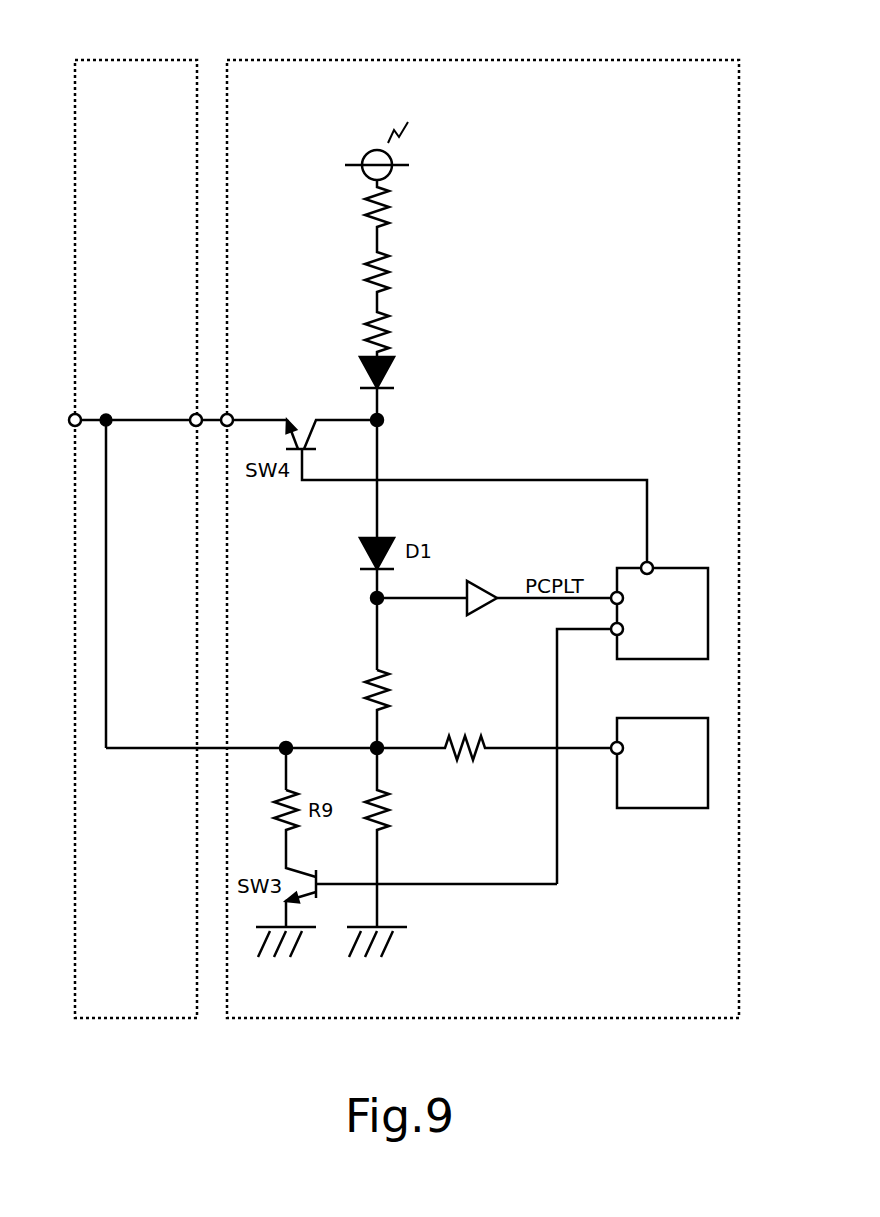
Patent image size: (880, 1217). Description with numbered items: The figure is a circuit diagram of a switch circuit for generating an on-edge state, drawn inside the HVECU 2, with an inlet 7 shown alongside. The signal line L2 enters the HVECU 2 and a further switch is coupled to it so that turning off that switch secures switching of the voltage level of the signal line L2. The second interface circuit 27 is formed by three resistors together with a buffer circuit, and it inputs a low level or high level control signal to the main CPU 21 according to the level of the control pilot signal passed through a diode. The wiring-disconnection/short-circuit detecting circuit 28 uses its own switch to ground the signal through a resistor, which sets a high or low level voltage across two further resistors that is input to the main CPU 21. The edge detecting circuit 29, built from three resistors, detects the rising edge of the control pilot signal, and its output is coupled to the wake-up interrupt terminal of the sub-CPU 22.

The HVECU 2 is at (680, 60).
The inlet 7 is at (138, 60).
The main CPU 21 is at (683, 568).
The sub-CPU 22 is at (686, 718).
The second interface circuit 27 is at (465, 218).
The wiring-disconnection/short-circuit detecting circuit 28 is at (302, 766).
The edge detecting circuit 29 is at (458, 810).
The signal line L2 is at (145, 420).